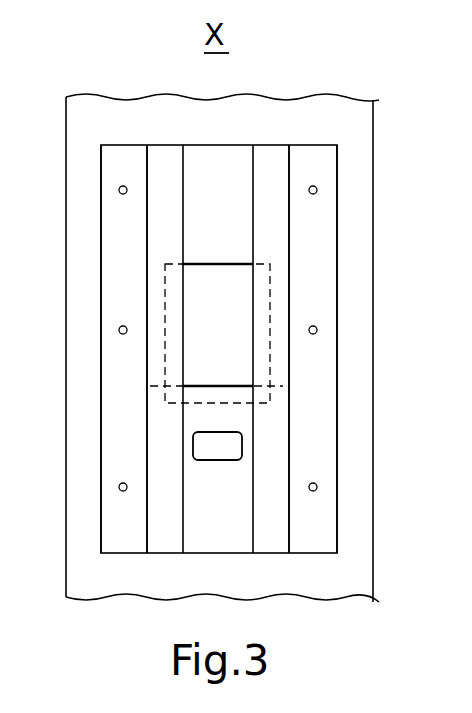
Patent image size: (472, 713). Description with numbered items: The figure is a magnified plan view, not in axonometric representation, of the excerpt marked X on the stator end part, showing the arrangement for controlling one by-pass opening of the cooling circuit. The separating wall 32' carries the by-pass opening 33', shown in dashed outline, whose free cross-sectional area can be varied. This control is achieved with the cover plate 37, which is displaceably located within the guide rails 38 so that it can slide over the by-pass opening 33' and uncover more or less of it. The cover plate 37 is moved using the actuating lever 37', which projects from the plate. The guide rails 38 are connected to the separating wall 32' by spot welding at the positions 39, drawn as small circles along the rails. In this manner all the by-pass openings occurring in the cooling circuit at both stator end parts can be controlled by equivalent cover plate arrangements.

The separating wall 32' is at (247, 348).
The by-pass opening 33' is at (290, 349).
The cover plate 37 is at (304, 325).
The actuating lever 37' is at (312, 453).
The guide rails 38 is at (120, 240).
The spot welding positions 39 is at (317, 490).